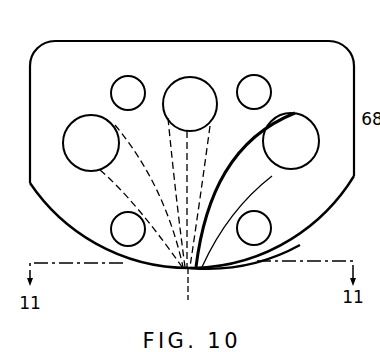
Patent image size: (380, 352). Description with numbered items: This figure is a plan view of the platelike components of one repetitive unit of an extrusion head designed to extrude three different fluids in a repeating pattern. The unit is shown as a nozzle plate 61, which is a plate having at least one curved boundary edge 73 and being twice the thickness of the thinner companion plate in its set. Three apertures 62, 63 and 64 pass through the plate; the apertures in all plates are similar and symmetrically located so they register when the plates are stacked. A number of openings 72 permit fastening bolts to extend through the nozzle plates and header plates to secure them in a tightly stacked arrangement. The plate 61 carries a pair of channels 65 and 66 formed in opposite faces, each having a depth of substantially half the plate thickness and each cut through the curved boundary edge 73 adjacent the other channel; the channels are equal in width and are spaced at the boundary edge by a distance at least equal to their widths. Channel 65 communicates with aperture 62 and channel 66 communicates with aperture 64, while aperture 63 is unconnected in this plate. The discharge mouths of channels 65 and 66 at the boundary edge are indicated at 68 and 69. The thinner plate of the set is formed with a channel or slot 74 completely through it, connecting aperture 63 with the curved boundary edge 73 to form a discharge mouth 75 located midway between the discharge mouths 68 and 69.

The nozzle plate 61 is at (152, 50).
The aperture 62 is at (84, 125).
The aperture 63 is at (206, 82).
The aperture 64 is at (306, 125).
The channel 65 is at (140, 181).
The channel 66 is at (270, 177).
The discharge mouth 68 is at (180, 270).
The discharge mouth 69 is at (198, 271).
The opening 72 is at (127, 78).
The curved boundary edge 73 is at (250, 262).
The channel or slot 74 is at (202, 146).
The discharge mouth 75 is at (188, 300).